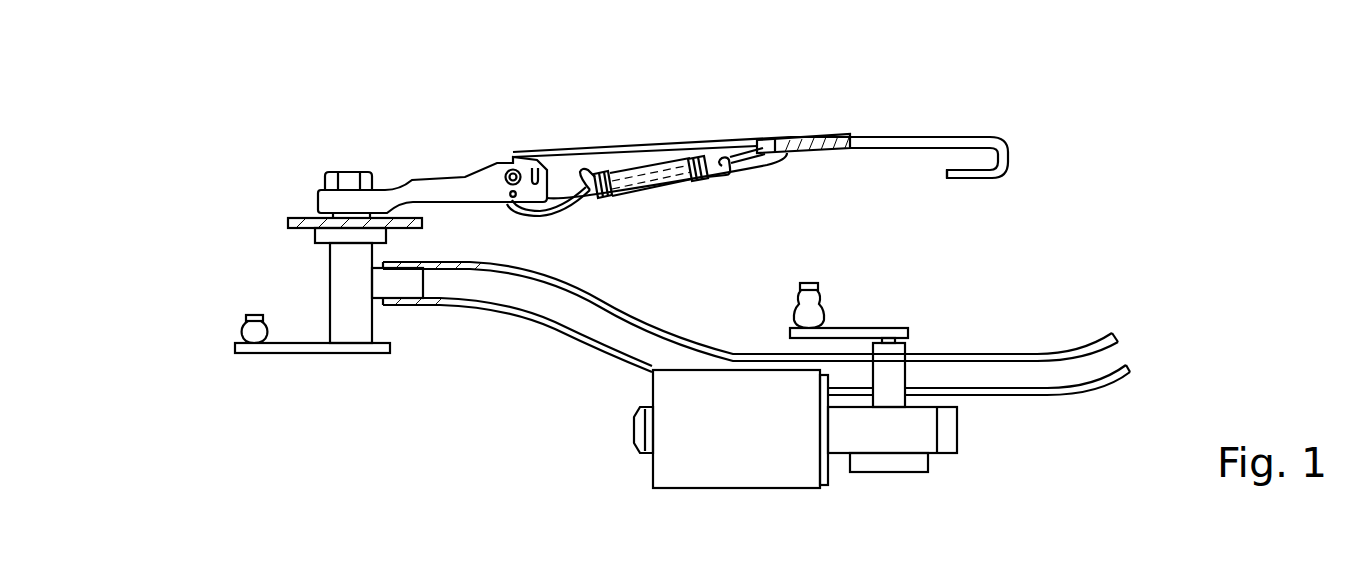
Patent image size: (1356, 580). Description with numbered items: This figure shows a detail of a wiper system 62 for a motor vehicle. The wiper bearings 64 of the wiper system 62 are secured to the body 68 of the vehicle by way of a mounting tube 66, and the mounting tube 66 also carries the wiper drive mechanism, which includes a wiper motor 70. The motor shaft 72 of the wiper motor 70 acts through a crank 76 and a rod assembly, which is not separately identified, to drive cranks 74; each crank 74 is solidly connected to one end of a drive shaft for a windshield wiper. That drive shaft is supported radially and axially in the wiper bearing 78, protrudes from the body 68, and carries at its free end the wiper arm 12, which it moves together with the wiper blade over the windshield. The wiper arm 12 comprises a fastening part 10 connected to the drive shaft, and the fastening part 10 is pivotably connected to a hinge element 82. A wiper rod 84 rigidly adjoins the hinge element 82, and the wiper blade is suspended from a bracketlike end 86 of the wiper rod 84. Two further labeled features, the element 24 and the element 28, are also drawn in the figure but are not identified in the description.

The fastening part 10 is at (480, 174).
The wiper arm 12 is at (818, 122).
The fastening nut 24 is at (353, 182).
The drive shaft axis 28 is at (320, 90).
The wiper system 62 is at (866, 493).
The wiper bearings 64 is at (751, 375).
The mounting tube 66 is at (1230, 296).
The body 68 is at (297, 222).
The wiper motor 70 is at (673, 457).
The motor shaft 72 is at (1053, 313).
The cranks 74 is at (303, 347).
The crank 76 is at (950, 279).
The wiper bearing 78 is at (348, 327).
The hinge element 82 is at (693, 128).
The wiper rod 84 is at (953, 123).
The bracketlike end 86 is at (921, 212).